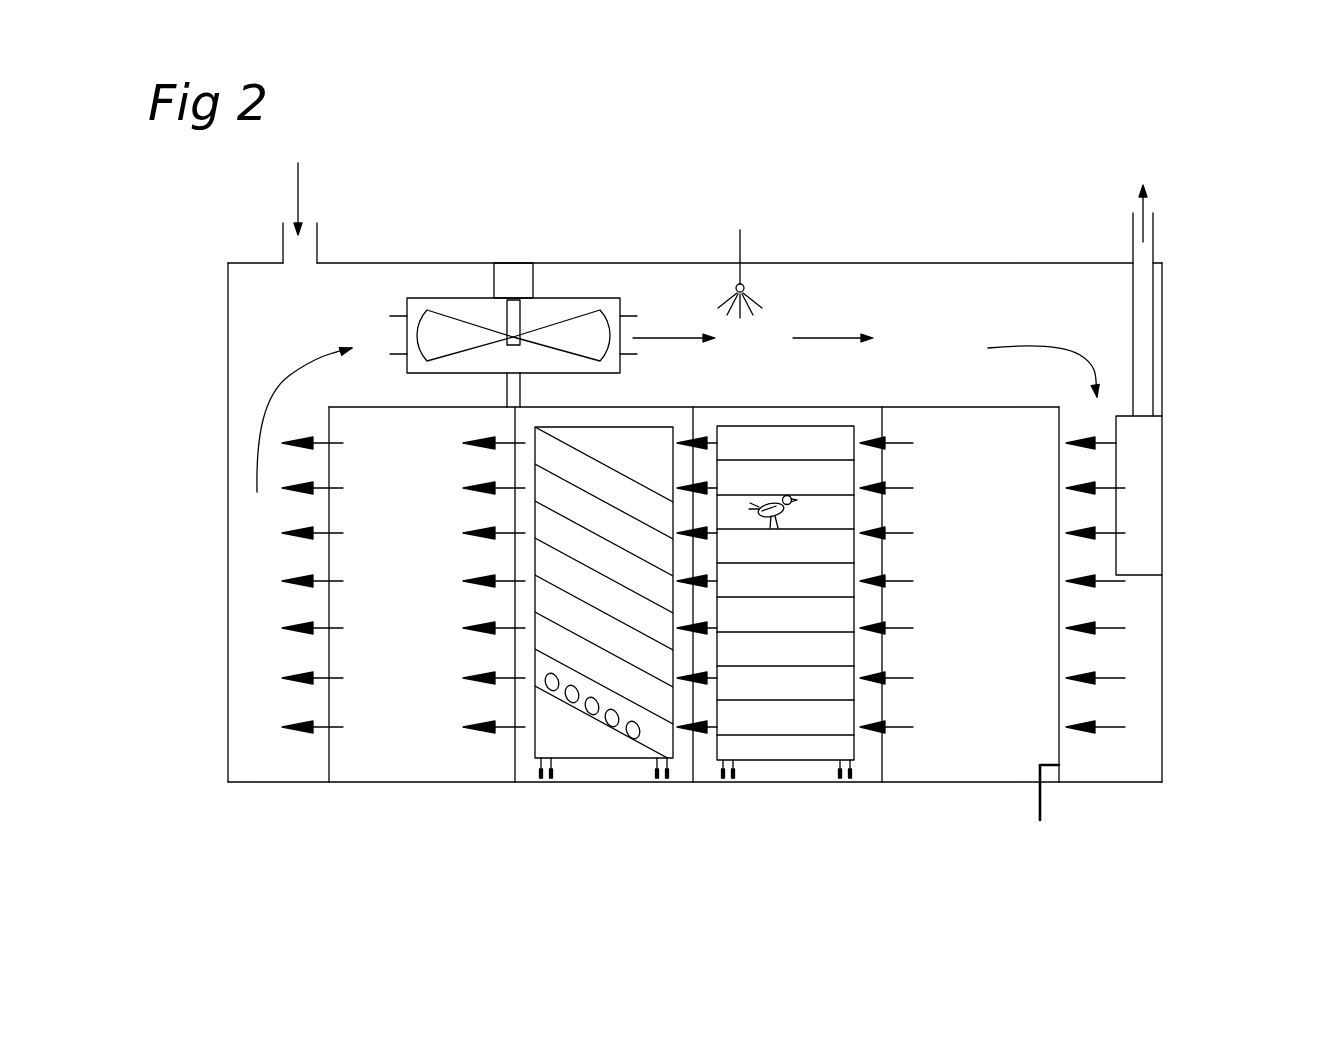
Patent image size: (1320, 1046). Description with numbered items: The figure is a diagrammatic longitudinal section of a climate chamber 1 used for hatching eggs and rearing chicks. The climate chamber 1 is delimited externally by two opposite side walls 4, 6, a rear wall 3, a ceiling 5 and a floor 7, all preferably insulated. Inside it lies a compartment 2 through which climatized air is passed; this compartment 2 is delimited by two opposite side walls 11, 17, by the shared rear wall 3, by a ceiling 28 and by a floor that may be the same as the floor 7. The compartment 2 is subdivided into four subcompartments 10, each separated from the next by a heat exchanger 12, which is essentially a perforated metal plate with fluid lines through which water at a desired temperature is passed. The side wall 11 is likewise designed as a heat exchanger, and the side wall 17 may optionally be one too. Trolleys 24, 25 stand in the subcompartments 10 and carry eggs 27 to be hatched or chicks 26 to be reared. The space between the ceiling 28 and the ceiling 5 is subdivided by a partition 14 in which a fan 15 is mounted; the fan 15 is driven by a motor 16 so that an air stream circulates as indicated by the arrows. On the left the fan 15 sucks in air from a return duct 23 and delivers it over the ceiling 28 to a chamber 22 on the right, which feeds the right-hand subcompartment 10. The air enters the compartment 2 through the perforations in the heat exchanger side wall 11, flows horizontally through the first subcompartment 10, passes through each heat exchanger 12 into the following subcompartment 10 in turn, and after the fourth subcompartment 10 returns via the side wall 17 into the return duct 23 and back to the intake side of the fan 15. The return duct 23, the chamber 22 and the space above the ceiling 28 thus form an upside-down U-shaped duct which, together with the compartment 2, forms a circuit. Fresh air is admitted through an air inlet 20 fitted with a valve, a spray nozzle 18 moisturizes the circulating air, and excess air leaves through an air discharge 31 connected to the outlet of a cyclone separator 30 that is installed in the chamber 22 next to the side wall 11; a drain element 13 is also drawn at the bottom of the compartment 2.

The climate chamber 1 is at (1195, 212).
The compartment 2 is at (963, 407).
The rear wall 3 is at (1089, 287).
The side wall 4 is at (1162, 607).
The ceiling 5 is at (328, 260).
The side wall 6 is at (228, 531).
The floor 7 is at (1123, 782).
The subcompartment 10 is at (408, 762).
The side wall 11 is at (1060, 755).
The heat exchanger 12 is at (512, 762).
The drain 13 is at (1040, 805).
The partition 14 is at (513, 388).
The fan 15 is at (440, 332).
The motor 16 is at (510, 282).
The side wall 17 is at (328, 762).
The spray nozzle 18 is at (746, 287).
The air inlet 20 is at (288, 247).
The chamber 22 is at (1135, 693).
The return duct 23 is at (256, 654).
The trolley 24 is at (763, 718).
The trolley 25 is at (577, 765).
The chicks 26 is at (785, 525).
The eggs 27 is at (633, 739).
The ceiling 28 is at (907, 407).
The cyclone separator 30 is at (1140, 480).
The air discharge 31 is at (1150, 222).